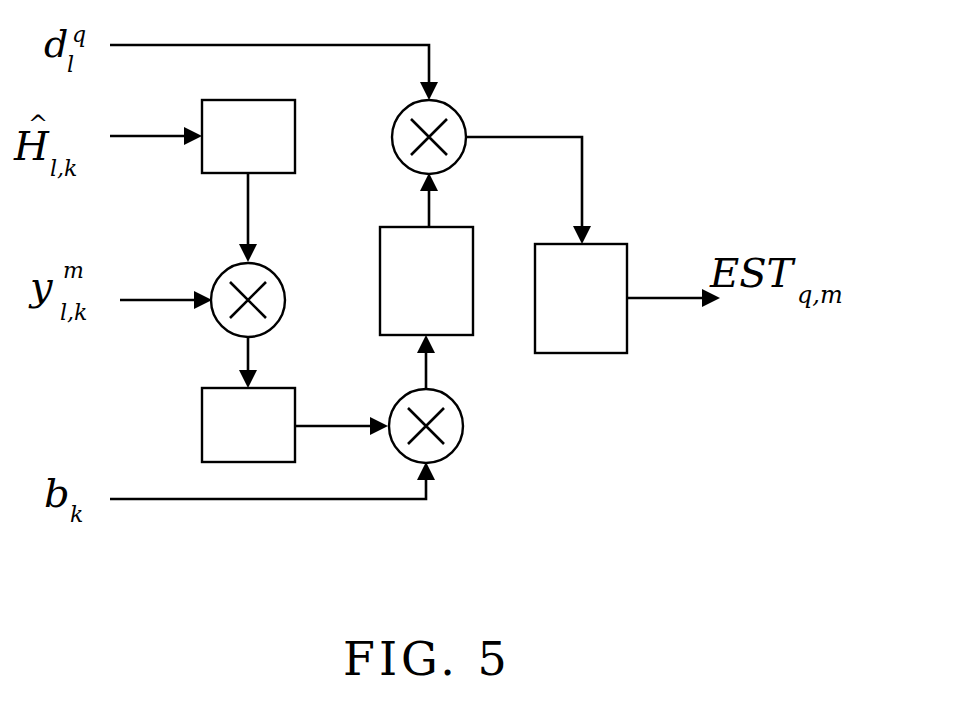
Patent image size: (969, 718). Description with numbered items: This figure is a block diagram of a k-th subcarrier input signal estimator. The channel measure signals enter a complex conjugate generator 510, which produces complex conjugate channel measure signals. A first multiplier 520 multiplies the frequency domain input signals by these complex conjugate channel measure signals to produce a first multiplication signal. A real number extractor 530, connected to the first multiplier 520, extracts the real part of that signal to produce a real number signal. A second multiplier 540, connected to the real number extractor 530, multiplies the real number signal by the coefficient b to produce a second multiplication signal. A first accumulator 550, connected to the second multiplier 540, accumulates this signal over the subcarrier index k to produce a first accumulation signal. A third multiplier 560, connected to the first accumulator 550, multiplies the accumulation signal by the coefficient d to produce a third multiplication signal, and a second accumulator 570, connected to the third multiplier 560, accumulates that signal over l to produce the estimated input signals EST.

The complex conjugate generator 510 is at (202, 154).
The first multiplier 520 is at (216, 318).
The real number extractor 530 is at (202, 428).
The second multiplier 540 is at (463, 426).
The first accumulator 550 is at (380, 278).
The third multiplier 560 is at (457, 108).
The second accumulator 570 is at (615, 244).